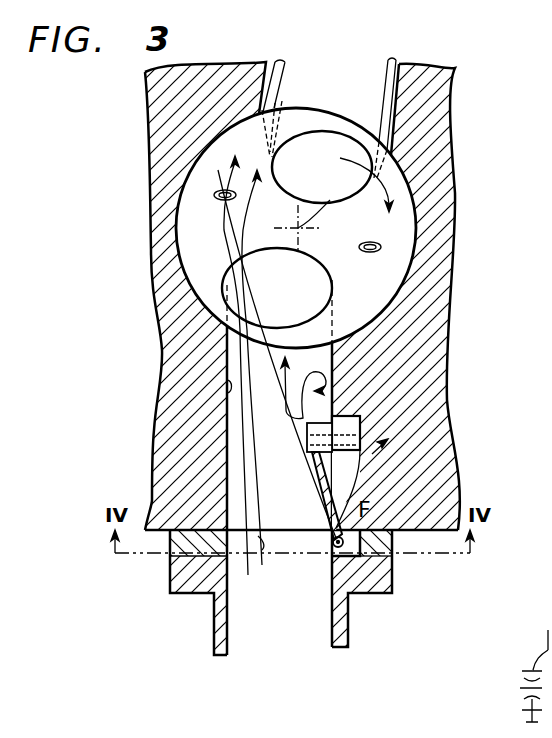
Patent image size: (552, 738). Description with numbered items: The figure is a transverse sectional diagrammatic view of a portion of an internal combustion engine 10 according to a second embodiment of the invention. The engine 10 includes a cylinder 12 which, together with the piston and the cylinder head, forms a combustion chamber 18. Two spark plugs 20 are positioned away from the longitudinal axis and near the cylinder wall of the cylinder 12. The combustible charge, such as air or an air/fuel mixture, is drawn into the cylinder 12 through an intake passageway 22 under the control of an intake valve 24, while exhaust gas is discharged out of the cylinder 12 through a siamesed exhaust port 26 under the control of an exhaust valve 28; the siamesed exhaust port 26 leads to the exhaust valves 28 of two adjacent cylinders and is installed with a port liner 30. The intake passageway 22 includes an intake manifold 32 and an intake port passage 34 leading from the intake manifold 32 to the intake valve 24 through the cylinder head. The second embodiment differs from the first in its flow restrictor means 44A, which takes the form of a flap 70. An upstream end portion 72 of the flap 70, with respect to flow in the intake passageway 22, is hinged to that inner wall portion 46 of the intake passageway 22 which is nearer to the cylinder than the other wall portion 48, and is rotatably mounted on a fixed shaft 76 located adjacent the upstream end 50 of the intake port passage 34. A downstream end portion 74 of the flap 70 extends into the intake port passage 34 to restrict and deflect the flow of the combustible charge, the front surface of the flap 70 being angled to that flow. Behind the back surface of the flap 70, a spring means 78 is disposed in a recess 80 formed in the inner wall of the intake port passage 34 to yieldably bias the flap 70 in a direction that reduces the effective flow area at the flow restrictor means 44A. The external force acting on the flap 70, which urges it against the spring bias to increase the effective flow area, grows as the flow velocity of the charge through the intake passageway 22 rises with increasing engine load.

The internal combustion engine 10 is at (148, 214).
The cylinder 12 is at (408, 236).
The combustion chamber 18 is at (342, 256).
The spark plugs 20 is at (220, 191).
The intake passageway 22 is at (246, 590).
The intake valve 24 is at (222, 287).
The siamesed exhaust port 26 is at (330, 84).
The exhaust valve 28 is at (290, 177).
The port liner 30 is at (284, 62).
The intake manifold 32 is at (215, 635).
The intake port passage 34 is at (235, 427).
The flow restrictor means 44A is at (301, 485).
The inner wall portion 46 is at (418, 366).
The other wall portion 48 is at (230, 384).
The upstream end 50 is at (262, 540).
The flap 70 is at (308, 530).
The upstream end portion 72 is at (337, 548).
The downstream end portion 74 is at (333, 396).
The fixed shaft 76 is at (348, 594).
The spring means 78 is at (380, 421).
The recess 80 is at (413, 473).